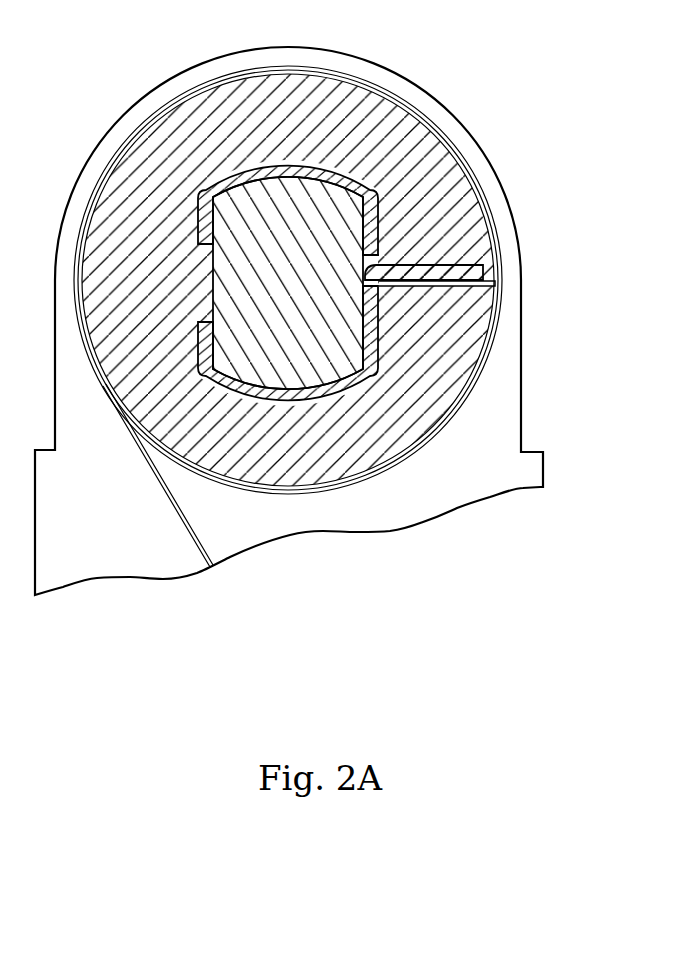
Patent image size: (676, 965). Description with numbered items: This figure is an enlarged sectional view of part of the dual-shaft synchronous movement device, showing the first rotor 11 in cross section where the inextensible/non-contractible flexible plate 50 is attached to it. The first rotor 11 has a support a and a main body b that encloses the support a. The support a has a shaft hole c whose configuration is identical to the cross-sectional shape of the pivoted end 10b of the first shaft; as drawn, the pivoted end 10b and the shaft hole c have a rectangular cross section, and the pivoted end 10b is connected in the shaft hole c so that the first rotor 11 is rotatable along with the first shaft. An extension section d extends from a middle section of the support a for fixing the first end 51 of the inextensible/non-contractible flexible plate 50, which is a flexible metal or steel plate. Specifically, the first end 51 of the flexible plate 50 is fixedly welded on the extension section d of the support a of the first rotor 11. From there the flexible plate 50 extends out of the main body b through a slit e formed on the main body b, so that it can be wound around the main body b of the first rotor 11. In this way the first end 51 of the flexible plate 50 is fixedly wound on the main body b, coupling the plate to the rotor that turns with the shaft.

The first rotor 11 is at (117, 119).
The support a is at (232, 174).
The pivoted end 10b is at (290, 212).
The inextensible/non-contractible flexible plate 50 is at (418, 110).
The extension section d is at (424, 264).
The first end 51 is at (486, 271).
The slit e is at (486, 288).
The shaft hole c is at (257, 392).
The main body b is at (332, 472).